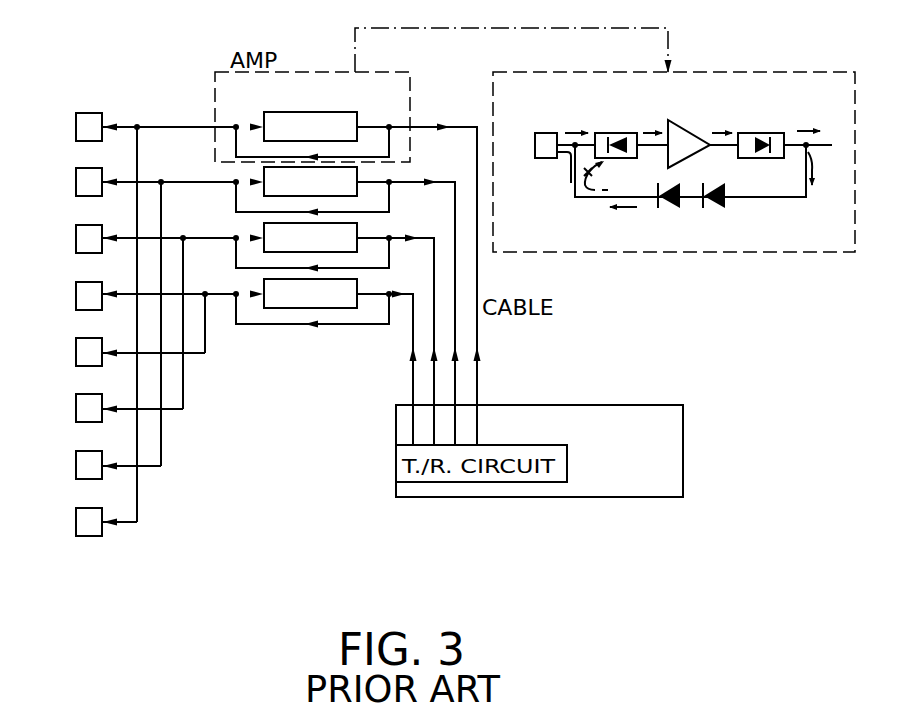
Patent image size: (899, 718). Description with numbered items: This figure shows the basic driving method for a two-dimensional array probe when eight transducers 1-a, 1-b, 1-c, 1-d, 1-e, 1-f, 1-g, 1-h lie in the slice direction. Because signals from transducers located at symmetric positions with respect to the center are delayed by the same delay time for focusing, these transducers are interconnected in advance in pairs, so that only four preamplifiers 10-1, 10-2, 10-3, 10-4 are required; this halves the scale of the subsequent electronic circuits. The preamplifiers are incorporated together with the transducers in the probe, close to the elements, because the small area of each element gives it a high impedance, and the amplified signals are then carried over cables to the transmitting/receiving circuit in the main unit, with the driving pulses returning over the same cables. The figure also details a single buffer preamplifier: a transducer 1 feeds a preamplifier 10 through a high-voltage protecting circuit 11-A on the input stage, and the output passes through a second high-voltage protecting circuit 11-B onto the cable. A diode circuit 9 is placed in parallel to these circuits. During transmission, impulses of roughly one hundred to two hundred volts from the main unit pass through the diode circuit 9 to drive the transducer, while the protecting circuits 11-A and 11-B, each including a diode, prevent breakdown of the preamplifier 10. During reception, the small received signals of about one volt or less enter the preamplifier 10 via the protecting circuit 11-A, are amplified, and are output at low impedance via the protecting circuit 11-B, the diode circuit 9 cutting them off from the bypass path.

The transducer 1-a is at (76, 124).
The transducer 1-b is at (76, 179).
The transducer 1-c is at (76, 235).
The transducer 1-d is at (76, 291).
The transducer 1-e is at (76, 350).
The transducer 1-f is at (76, 406).
The transducer 1-g is at (76, 463).
The transducer 1-h is at (76, 519).
The preamplifier 10-1 is at (367, 100).
The preamplifier 10-2 is at (357, 172).
The preamplifier 10-3 is at (357, 230).
The preamplifier 10-4 is at (357, 289).
The transducer 1 is at (534, 140).
The high-voltage protecting circuit 11-A is at (617, 133).
The preamplifier 10 is at (692, 130).
The high-voltage protecting circuit 11-B is at (785, 133).
The diode circuit 9 is at (707, 207).